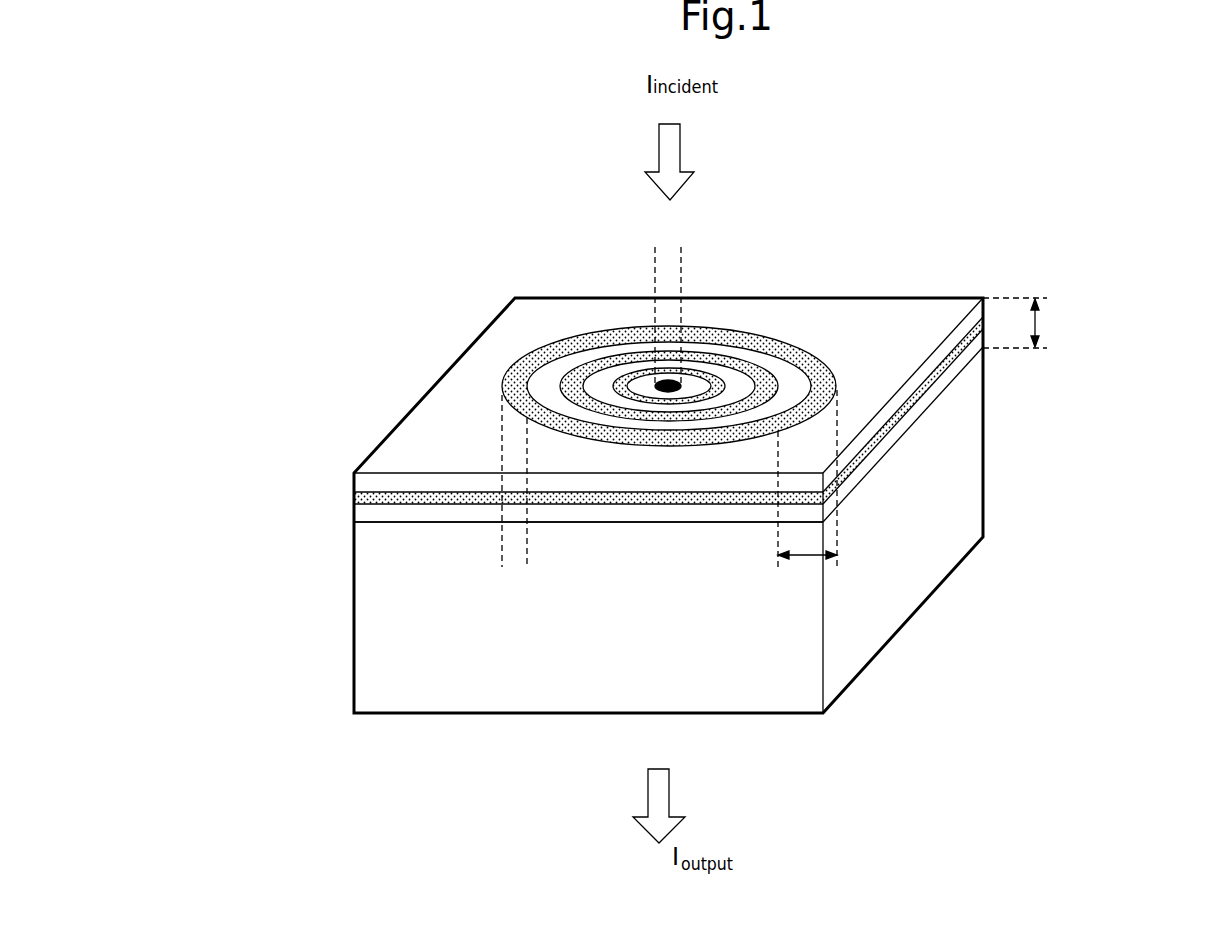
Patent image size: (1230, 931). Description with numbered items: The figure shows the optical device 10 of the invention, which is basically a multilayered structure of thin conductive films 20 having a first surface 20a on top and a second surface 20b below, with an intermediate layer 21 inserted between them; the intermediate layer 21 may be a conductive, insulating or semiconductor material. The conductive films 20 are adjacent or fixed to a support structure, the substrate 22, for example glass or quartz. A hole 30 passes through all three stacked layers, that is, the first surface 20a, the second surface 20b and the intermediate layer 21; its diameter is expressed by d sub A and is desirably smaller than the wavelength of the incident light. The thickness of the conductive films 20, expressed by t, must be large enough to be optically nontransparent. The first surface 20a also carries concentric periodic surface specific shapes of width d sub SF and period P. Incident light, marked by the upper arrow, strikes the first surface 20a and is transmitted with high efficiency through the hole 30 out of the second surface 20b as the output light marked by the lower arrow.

The optical device 10 is at (336, 142).
The conductive films 20 is at (352, 480).
The first surface 20a is at (500, 330).
The second surface 20b is at (435, 523).
The intermediate layer 21 is at (860, 462).
The substrate 22 is at (767, 692).
The hole 30 is at (672, 383).